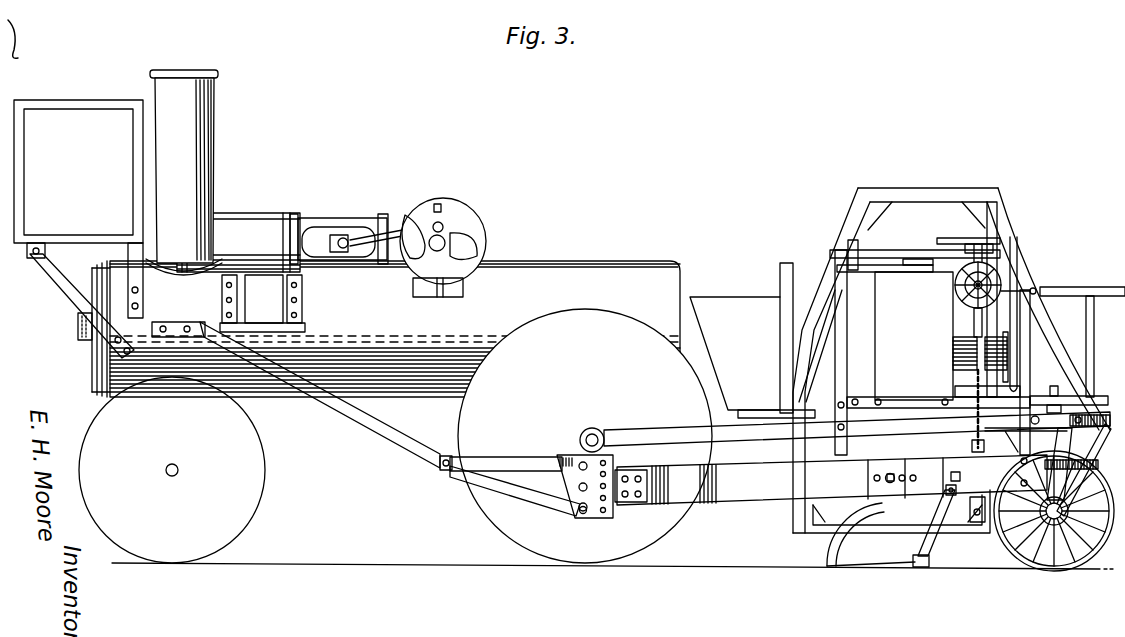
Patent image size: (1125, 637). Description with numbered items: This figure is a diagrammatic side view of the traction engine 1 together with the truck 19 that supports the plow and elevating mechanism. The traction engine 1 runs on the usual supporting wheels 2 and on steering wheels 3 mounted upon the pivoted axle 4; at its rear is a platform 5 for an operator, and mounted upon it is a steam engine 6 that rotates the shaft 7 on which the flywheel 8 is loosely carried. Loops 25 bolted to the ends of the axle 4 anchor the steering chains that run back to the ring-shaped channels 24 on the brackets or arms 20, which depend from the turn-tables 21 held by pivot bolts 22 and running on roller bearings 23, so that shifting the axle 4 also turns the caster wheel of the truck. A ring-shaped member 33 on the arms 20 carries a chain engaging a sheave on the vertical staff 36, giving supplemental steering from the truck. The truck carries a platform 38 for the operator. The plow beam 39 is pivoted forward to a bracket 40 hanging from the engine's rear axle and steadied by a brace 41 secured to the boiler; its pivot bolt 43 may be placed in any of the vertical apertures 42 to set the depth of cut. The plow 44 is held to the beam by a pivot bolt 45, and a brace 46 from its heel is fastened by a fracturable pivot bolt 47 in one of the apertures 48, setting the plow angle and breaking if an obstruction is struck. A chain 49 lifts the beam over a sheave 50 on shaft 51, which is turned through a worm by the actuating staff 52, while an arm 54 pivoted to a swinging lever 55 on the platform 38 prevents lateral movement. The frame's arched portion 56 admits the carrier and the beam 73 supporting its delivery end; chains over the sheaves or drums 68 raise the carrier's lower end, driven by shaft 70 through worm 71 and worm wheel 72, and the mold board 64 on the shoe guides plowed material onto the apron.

The traction engine 1 is at (379, 329).
The supporting wheels 2 is at (481, 530).
The steering wheels 3 is at (80, 504).
The axle 4 is at (178, 470).
The platform 5 is at (764, 410).
The steam engine 6 is at (238, 242).
The shaft 7 is at (455, 242).
The flywheel 8 is at (480, 209).
The truck 19 is at (925, 407).
The brackets or arms 20 is at (1080, 572).
The turn-tables 21 is at (1068, 476).
The pivot bolts 22 is at (1054, 396).
The roller bearings 23 is at (1090, 414).
The ring-shaped channels 24 is at (1021, 464).
The loops 25 is at (1091, 470).
The ring-shaped member 33 is at (977, 430).
The staff 36 is at (1088, 300).
The platform 38 is at (1022, 346).
The plow beam 39 is at (765, 492).
The bracket 40 is at (578, 492).
The brace 41 is at (368, 421).
The apertures 42 is at (608, 478).
The pivot bolt 43 is at (612, 502).
The plow 44 is at (880, 562).
The pivot bolt 45 is at (884, 478).
The brace 46 is at (946, 528).
The pivot bolt 47 is at (975, 476).
The apertures 48 is at (950, 489).
The chain 49 is at (968, 388).
The sheave 50 is at (962, 342).
The shaft 51 is at (1004, 335).
The actuating staff 52 is at (985, 281).
The arm 54 is at (1010, 350).
The lever 55 is at (1033, 288).
The arched portion 56 is at (926, 197).
The mold board 64 is at (862, 562).
The sheaves or drums 68 is at (848, 246).
The shaft 70 is at (972, 293).
The worm 71 is at (950, 282).
The worm wheel 72 is at (976, 238).
The beam 73 is at (916, 259).